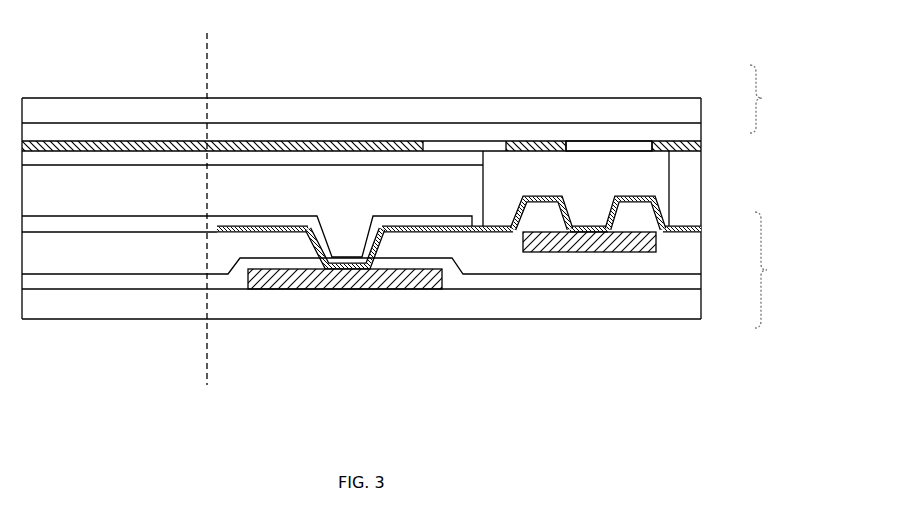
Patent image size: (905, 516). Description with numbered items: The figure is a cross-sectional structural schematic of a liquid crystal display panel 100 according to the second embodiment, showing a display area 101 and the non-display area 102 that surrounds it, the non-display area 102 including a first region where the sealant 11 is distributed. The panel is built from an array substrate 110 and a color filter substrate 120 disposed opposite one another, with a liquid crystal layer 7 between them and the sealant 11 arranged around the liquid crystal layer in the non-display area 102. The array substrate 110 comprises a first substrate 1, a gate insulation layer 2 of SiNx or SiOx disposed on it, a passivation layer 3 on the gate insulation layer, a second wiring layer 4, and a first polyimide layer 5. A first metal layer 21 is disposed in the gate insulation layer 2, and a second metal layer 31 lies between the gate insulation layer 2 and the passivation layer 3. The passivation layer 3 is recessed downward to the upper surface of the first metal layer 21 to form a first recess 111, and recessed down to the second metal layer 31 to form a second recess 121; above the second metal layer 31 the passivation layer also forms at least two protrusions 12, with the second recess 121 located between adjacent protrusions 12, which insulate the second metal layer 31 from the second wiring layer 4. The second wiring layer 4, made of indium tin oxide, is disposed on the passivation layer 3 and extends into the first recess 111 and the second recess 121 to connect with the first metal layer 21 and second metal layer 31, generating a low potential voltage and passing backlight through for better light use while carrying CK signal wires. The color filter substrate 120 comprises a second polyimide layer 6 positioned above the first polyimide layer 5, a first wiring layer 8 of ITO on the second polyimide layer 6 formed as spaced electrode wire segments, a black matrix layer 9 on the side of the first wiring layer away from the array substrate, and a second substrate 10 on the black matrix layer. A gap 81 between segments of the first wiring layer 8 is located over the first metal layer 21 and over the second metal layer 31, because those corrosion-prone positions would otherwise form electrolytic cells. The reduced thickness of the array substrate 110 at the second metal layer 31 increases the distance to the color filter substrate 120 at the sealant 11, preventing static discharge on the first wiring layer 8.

The liquid crystal display panel 100 is at (98, 49).
The color filter substrate 120 is at (776, 99).
The array substrate 110 is at (779, 270).
The second substrate 10 is at (660, 108).
The black matrix layer 9 is at (672, 135).
The first wiring layer 8 is at (263, 148).
The gap 81 is at (588, 147).
The second polyimide layer 6 is at (330, 158).
The liquid crystal layer 7 is at (397, 180).
The sealant 11 is at (645, 180).
The protrusions 12 is at (642, 213).
The second wiring layer 4 is at (703, 228).
The passivation layer 3 is at (687, 260).
The gate insulation layer 2 is at (683, 280).
The first substrate 1 is at (683, 302).
The second metal layer 31 is at (622, 243).
The first metal layer 21 is at (398, 290).
The first polyimide layer 5 is at (446, 220).
The first recess 111 is at (344, 250).
The display area 101 is at (77, 203).
The non-display area 102 is at (317, 192).
The second recess 121 is at (586, 218).